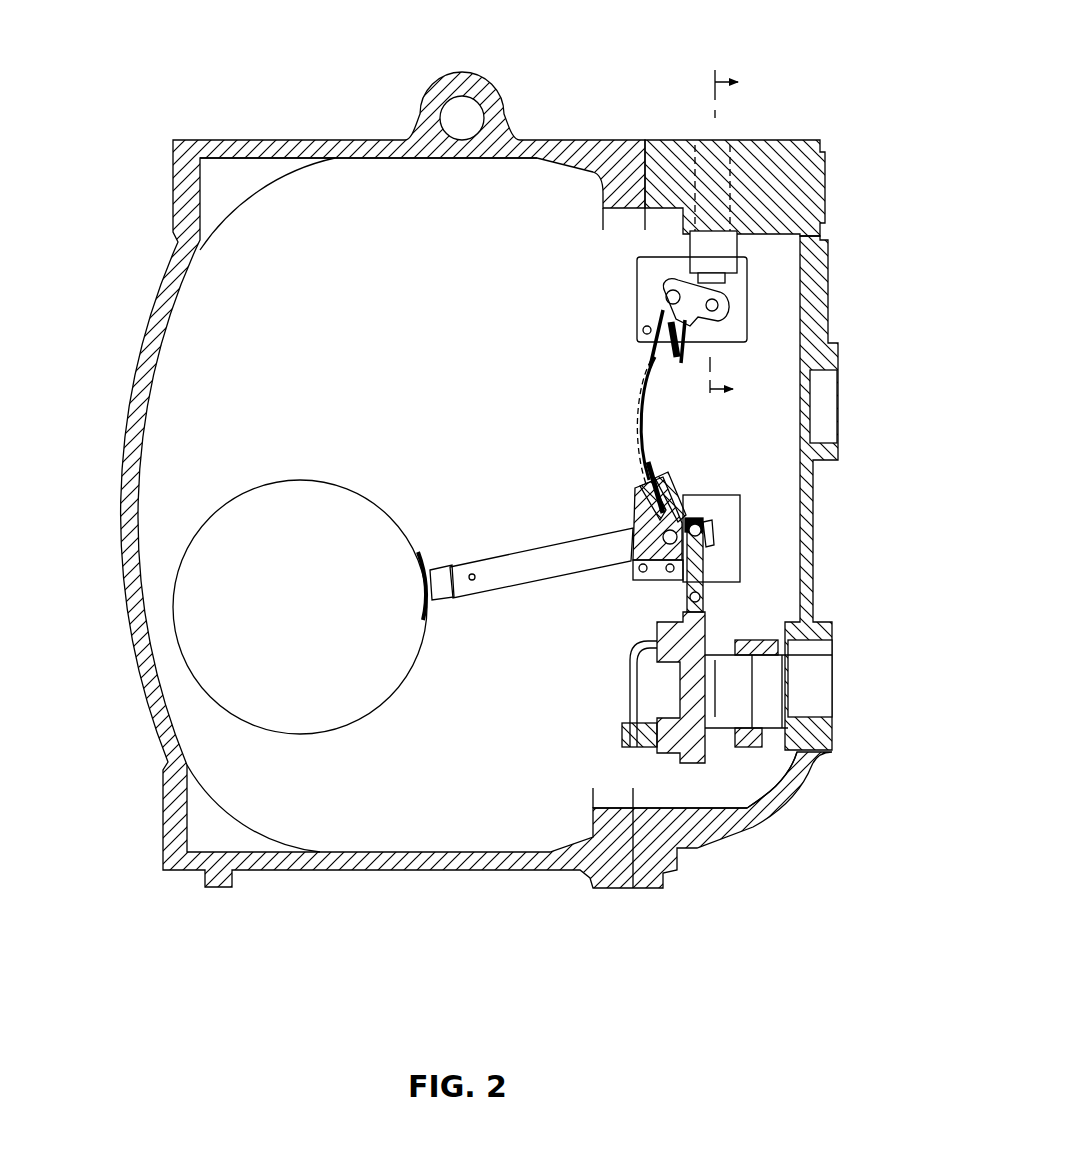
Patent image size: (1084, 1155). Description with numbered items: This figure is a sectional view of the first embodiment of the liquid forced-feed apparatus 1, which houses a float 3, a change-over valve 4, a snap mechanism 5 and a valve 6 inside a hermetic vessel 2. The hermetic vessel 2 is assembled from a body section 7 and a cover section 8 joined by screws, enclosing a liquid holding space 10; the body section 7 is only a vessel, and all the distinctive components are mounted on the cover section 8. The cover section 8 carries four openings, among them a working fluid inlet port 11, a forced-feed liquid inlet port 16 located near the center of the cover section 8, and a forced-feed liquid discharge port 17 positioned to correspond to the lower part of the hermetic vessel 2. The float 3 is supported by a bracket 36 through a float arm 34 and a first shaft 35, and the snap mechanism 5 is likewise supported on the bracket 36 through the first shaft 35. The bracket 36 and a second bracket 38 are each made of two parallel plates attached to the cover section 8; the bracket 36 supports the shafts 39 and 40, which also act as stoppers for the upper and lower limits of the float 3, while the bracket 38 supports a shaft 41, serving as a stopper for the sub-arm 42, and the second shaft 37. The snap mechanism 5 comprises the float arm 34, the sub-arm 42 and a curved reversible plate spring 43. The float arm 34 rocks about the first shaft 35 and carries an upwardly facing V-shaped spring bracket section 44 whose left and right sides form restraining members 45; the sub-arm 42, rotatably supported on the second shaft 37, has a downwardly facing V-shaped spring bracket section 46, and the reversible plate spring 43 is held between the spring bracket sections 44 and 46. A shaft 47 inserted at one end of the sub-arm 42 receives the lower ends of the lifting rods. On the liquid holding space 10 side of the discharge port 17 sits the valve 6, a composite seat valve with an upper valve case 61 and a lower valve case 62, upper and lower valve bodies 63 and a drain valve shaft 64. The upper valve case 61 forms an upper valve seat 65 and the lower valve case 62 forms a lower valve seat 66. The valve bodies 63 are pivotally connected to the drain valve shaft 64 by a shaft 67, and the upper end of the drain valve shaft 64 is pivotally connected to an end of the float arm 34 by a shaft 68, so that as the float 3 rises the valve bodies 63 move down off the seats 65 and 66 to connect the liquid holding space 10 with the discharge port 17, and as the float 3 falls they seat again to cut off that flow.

The liquid forced-feed apparatus 1 is at (576, 108).
The hermetic vessel 2 is at (372, 108).
The float 3 is at (238, 497).
The change-over valve 4 is at (760, 244).
The snap mechanism 5 is at (737, 453).
The valve 6 is at (716, 776).
The body section 7 is at (254, 143).
The cover section 8 is at (817, 173).
The liquid holding space 10 is at (300, 279).
The working fluid inlet port 11 is at (720, 178).
The forced-feed liquid inlet port 16 is at (830, 400).
The forced-feed liquid discharge port 17 is at (820, 698).
The float arm 34 is at (503, 567).
The first shaft 35 is at (633, 517).
The bracket 36 is at (734, 557).
The second shaft 37 is at (663, 287).
The bracket 38 is at (740, 332).
The shaft 39 is at (640, 571).
The shaft 40 is at (667, 573).
The shaft 41 is at (640, 330).
The sub-arm 42 is at (730, 293).
The reversible plate spring 43 is at (646, 380).
The spring bracket section 44 is at (744, 505).
The restraining members 45 is at (637, 490).
The spring bracket section 46 is at (662, 308).
The shaft 47 is at (730, 307).
The upper valve case 61 is at (632, 680).
The lower valve case 62 is at (620, 747).
The upper and lower valve bodies 63 is at (688, 683).
The drain valve shaft 64 is at (704, 562).
The upper valve seat 65 is at (775, 672).
The lower valve seat 66 is at (738, 752).
The shaft 67 is at (701, 597).
The shaft 68 is at (741, 533).